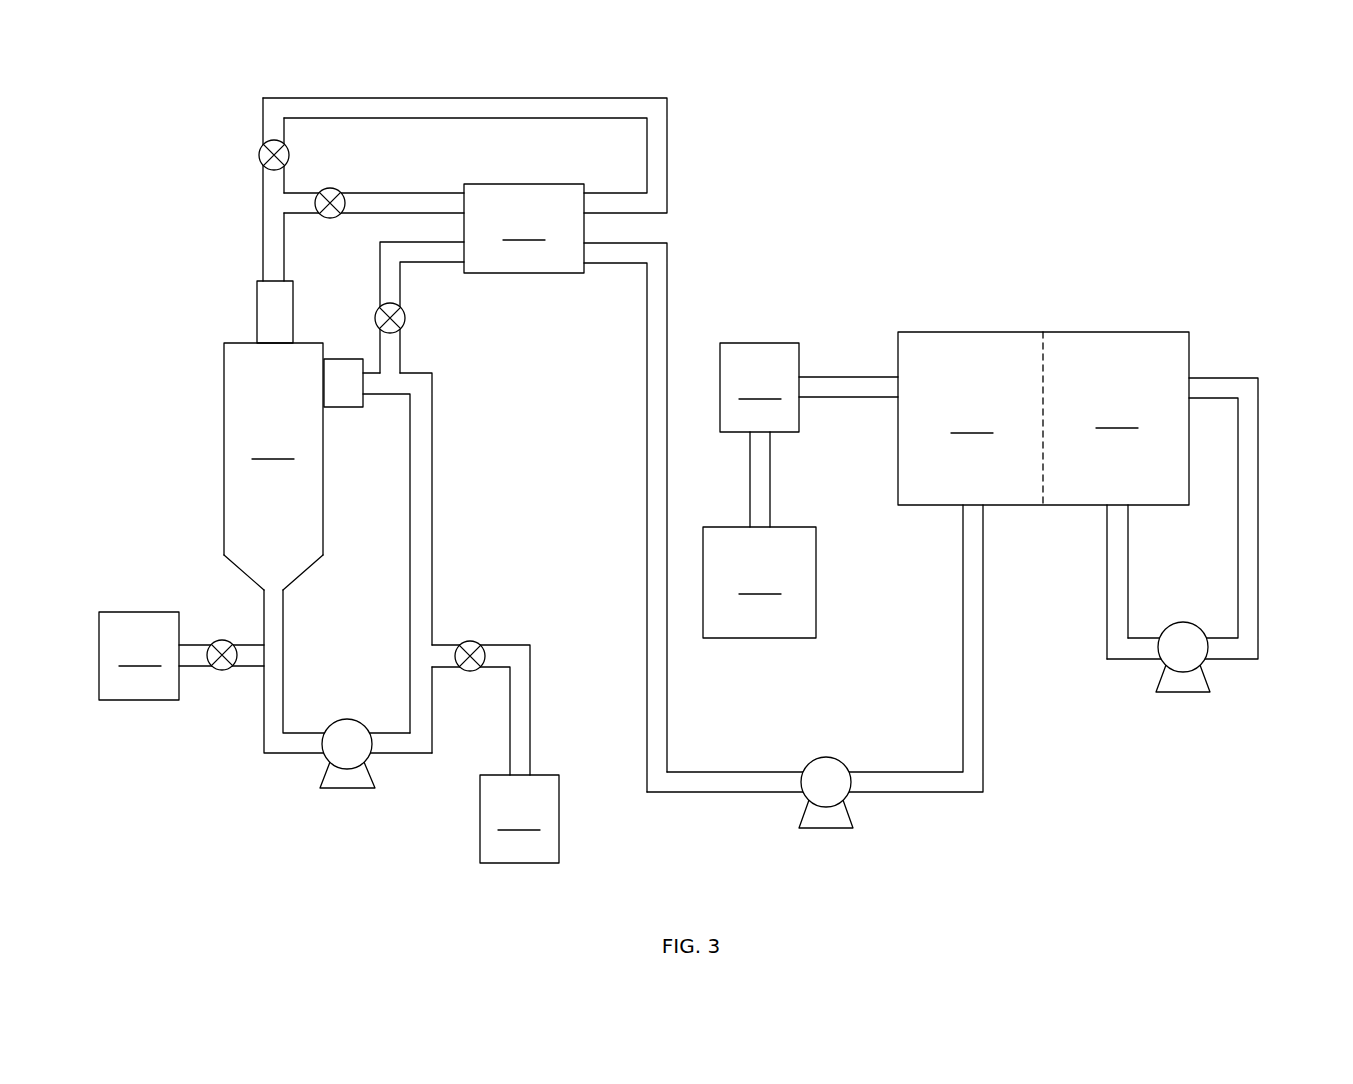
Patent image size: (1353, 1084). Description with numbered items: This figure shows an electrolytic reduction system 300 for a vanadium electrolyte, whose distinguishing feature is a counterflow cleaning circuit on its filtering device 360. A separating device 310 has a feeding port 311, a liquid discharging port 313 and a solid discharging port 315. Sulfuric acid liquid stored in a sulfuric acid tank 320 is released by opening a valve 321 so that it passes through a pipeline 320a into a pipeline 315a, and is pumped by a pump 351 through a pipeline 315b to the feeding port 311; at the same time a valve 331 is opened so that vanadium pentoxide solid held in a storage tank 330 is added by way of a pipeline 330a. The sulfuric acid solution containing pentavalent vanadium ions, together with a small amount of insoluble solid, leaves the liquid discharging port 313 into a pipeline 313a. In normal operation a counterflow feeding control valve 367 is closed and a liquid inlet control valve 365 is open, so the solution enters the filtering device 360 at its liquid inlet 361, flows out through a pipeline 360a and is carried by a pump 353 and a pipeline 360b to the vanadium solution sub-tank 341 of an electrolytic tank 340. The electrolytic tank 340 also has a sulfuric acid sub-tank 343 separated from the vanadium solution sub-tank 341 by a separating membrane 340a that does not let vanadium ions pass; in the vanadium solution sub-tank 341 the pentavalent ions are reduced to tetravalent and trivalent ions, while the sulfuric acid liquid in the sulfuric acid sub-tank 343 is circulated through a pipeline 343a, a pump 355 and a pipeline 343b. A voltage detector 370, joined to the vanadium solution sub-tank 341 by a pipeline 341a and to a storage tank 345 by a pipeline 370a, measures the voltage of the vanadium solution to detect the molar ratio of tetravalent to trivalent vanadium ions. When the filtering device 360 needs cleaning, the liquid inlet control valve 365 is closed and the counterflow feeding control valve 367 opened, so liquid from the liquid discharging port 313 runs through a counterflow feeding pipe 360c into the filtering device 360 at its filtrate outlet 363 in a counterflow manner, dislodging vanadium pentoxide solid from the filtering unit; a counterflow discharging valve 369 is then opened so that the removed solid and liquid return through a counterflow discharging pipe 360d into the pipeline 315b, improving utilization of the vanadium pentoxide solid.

The electrolytic reduction system 300 is at (134, 122).
The separating device 310 is at (273, 449).
The feeding port 311 is at (344, 407).
The liquid discharging port 313 is at (257, 303).
The pipeline 313a is at (263, 228).
The solid discharging port 315 is at (266, 590).
The pipeline 315a is at (285, 655).
The pipeline 315b is at (433, 483).
The sulfuric acid tank 320 is at (139, 656).
The pipeline 320a is at (198, 668).
The valve 321 is at (220, 672).
The storage tank 330 is at (519, 819).
The pipeline 330a is at (532, 712).
The valve 331 is at (470, 640).
The electrolytic tank 340 is at (981, 332).
The separating membrane 340a is at (1058, 362).
The vanadium solution sub-tank 341 is at (972, 422).
The pipeline 341a is at (843, 377).
The sulfuric acid sub-tank 343 is at (1117, 417).
The pipeline 343a is at (1260, 517).
The pipeline 343b is at (1106, 562).
The storage tank 345 is at (759, 582).
The pump 351 is at (347, 790).
The pump 353 is at (826, 830).
The pump 355 is at (1183, 695).
The filtering device 360 is at (524, 228).
The pipeline 360a is at (668, 265).
The second connecting pipe 360b is at (934, 795).
The counterflow feeding pipe 360c is at (554, 98).
The counterflow discharging pipe 360d is at (433, 264).
The liquid inlet 361 is at (444, 229).
The filtrate outlet 363 is at (605, 228).
The liquid inlet control valve 365 is at (330, 188).
The counterflow feeding control valve 367 is at (258, 155).
The counterflow discharging valve 369 is at (407, 318).
The voltage detector 370 is at (759, 387).
The pipeline 370a is at (771, 477).